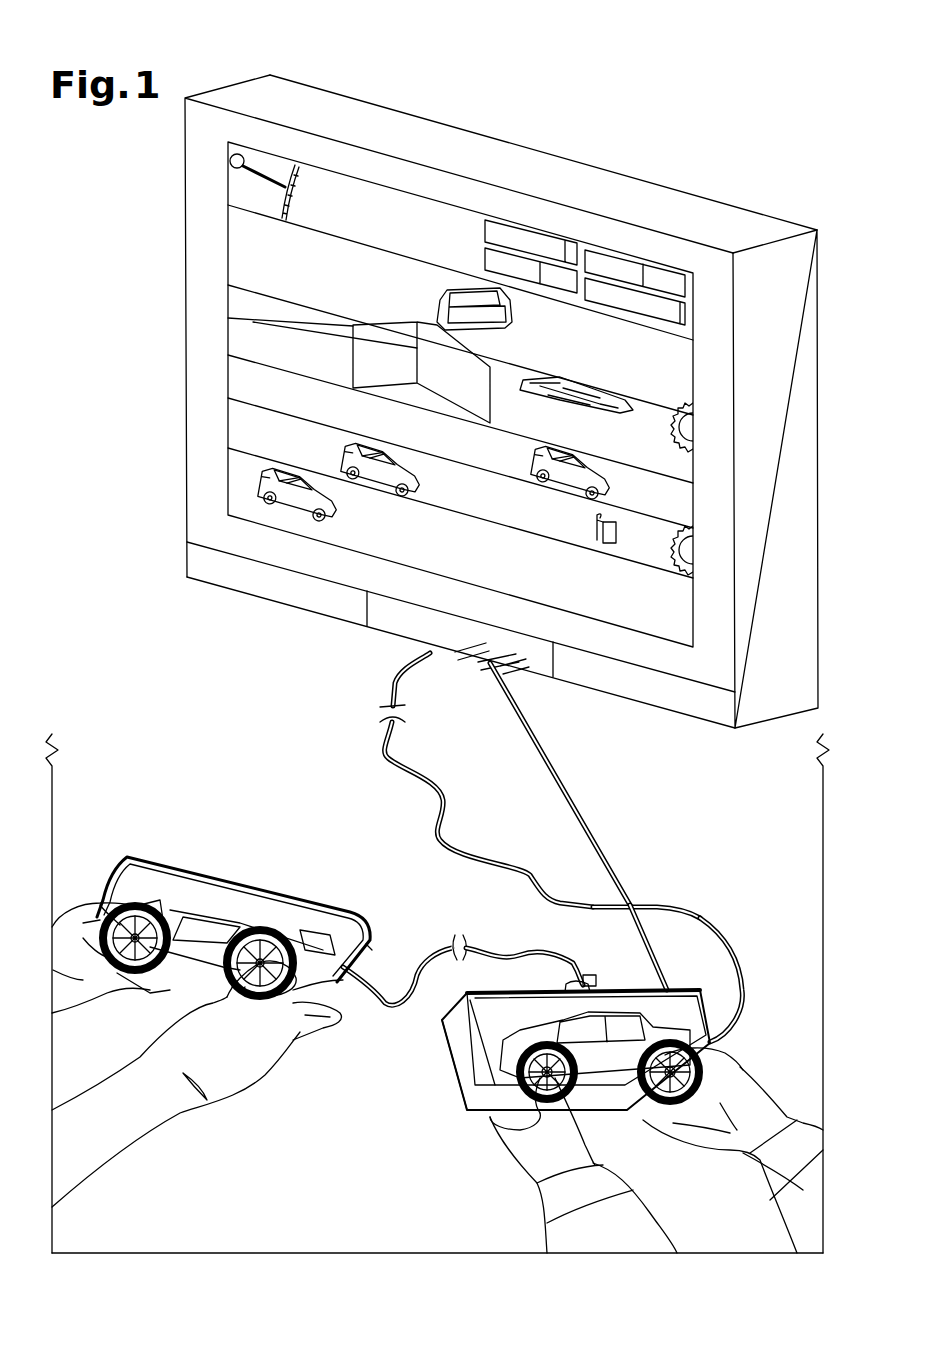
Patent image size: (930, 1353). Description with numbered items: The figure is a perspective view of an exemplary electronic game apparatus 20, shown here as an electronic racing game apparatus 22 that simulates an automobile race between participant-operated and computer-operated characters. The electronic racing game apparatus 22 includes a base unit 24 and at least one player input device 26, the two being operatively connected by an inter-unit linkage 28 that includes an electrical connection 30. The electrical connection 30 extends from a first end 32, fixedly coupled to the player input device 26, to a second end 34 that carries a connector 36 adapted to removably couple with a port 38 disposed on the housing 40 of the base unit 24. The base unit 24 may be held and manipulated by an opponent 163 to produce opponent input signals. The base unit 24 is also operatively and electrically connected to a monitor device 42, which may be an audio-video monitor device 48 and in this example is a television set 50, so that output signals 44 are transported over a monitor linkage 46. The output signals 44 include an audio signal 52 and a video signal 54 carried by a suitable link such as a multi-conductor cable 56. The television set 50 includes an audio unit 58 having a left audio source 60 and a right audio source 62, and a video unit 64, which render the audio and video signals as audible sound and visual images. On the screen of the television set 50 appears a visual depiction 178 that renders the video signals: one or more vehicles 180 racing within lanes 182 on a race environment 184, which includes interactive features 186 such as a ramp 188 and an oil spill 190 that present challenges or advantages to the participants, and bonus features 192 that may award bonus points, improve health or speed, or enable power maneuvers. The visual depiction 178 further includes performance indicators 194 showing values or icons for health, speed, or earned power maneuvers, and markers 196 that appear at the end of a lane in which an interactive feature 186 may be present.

The electronic game apparatus 20 is at (84, 197).
The electronic racing game apparatus 22 is at (116, 270).
The base unit 24 is at (462, 1067).
The player input device 26 is at (180, 882).
The inter-unit linkage 28 is at (426, 970).
The electrical connection 30 is at (487, 950).
The first end 32 is at (374, 948).
The second end 34 is at (594, 974).
The connector 36 is at (600, 987).
The port 38 is at (568, 982).
The housing 40 is at (490, 1002).
The monitor device 42 is at (583, 178).
The output signals 44 is at (437, 774).
The monitor linkage 46 is at (522, 862).
The audio-video monitor device 48 is at (661, 198).
The television set 50 is at (757, 223).
The audio signal 52 is at (584, 897).
The video signal 54 is at (652, 897).
The multi-conductor cable 56 is at (714, 950).
The audio unit 58 is at (246, 588).
The left audio source 60 is at (344, 625).
The right audio source 62 is at (670, 715).
The video unit 64 is at (670, 631).
The opponent 163 is at (520, 1150).
The visual depiction 178 is at (245, 275).
The vehicles 180 is at (384, 490).
The lanes 182 is at (228, 472).
The race environment 184 is at (226, 318).
The interactive features 186 is at (563, 395).
The ramp 188 is at (392, 330).
The oil spill 190 is at (597, 396).
The bonus features 192 is at (598, 537).
The performance indicators 194 is at (483, 262).
The markers 196 is at (690, 548).